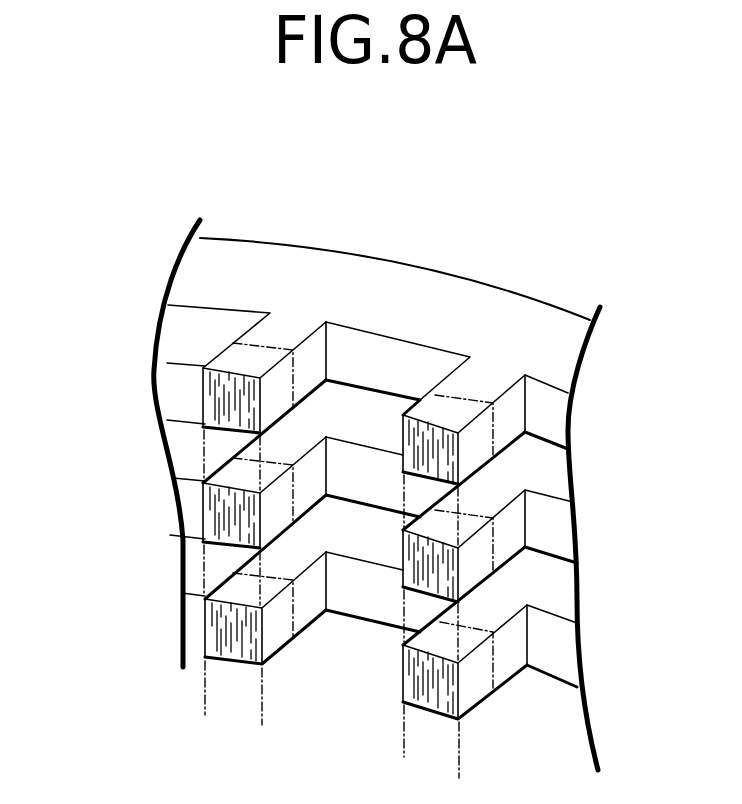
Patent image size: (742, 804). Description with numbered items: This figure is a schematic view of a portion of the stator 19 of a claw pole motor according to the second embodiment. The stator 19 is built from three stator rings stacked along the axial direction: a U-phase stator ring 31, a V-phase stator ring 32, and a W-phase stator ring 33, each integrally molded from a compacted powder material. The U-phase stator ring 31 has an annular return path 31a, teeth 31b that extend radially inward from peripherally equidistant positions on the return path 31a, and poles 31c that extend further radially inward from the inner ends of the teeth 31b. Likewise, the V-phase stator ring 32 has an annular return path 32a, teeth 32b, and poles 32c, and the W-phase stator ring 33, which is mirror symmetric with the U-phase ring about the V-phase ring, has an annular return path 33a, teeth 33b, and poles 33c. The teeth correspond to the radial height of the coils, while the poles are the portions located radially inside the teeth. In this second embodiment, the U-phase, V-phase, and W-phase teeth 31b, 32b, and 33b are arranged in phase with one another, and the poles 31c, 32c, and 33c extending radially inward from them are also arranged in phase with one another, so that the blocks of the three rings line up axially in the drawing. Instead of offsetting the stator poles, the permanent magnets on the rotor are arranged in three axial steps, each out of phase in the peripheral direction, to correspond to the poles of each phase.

The stator 19 is at (218, 200).
The U-phase stator ring 31 is at (360, 365).
The annular return path 31a is at (368, 273).
The teeth 31b is at (288, 327).
The poles 31c is at (230, 360).
The V-phase stator ring 32 is at (362, 474).
The annular return path 32a is at (378, 410).
The teeth 32b is at (293, 440).
The poles 32c is at (228, 476).
The W-phase stator ring 33 is at (365, 631).
The annular return path 33a is at (380, 547).
The teeth 33b is at (293, 555).
The poles 33c is at (228, 591).